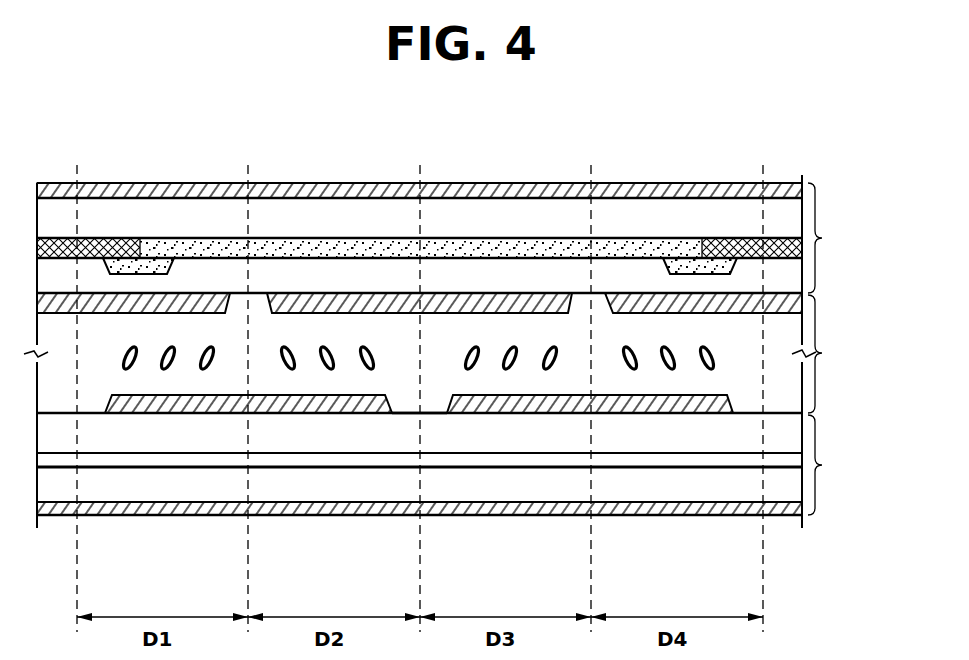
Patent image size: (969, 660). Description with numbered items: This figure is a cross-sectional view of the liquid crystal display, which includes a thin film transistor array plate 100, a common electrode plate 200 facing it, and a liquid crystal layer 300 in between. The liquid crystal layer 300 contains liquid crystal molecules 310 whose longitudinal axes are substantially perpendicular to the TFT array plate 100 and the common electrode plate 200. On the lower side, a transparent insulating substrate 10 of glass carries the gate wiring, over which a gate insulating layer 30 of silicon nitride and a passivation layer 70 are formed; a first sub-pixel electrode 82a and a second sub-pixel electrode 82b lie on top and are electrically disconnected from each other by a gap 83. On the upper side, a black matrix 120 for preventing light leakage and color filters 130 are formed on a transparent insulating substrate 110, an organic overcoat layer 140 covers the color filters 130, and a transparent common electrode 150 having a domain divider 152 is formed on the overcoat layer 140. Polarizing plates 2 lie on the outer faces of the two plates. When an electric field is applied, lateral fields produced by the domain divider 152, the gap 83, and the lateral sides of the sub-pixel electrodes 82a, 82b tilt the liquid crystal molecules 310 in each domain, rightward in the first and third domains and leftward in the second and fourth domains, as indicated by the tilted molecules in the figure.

The polarizing plate 2 is at (643, 186).
The insulating substrate 10 is at (307, 497).
The gate insulating layer 30 is at (369, 469).
The passivation layer 70 is at (475, 455).
The first sub-pixel electrode 82a is at (630, 415).
The second sub-pixel electrode 82b is at (213, 415).
The gap 83 is at (427, 398).
The thin film transistor array plate 100 is at (838, 465).
The insulating substrate 110 is at (57, 205).
The black matrix 120 is at (120, 246).
The color filters 130 is at (303, 244).
The overcoat layer 140 is at (463, 270).
The common electrode 150 is at (533, 307).
The domain divider 152 is at (256, 304).
The common electrode plate 200 is at (838, 238).
The liquid crystal layer 300 is at (838, 354).
The liquid crystal molecules 310 is at (124, 350).